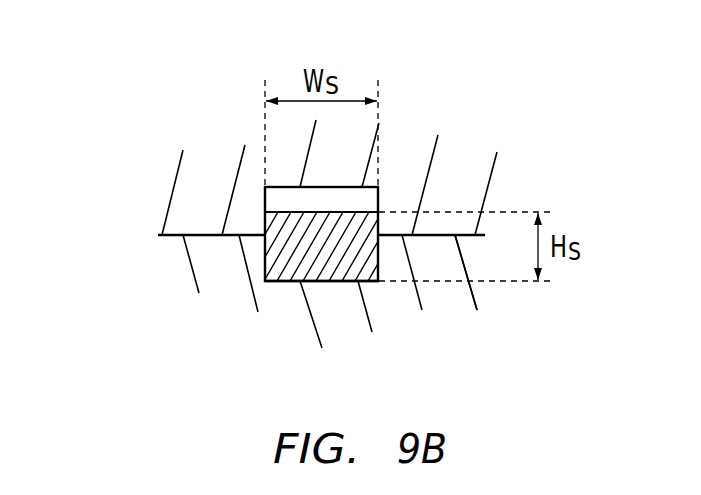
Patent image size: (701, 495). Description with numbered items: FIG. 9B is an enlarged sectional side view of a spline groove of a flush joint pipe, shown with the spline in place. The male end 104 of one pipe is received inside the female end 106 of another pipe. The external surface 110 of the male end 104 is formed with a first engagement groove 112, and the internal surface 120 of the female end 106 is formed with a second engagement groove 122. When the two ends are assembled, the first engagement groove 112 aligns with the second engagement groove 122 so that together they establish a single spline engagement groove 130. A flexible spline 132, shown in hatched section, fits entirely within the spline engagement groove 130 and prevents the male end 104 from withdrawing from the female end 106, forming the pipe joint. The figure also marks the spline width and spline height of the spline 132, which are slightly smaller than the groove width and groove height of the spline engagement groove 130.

The male end 104 is at (144, 275).
The female end 106 is at (144, 192).
The external surface 110 is at (405, 234).
The first engagement groove 112 is at (297, 280).
The internal surface 120 is at (437, 240).
The second engagement groove 122 is at (282, 187).
The spline engagement groove 130 is at (277, 198).
The spline 132 is at (290, 245).